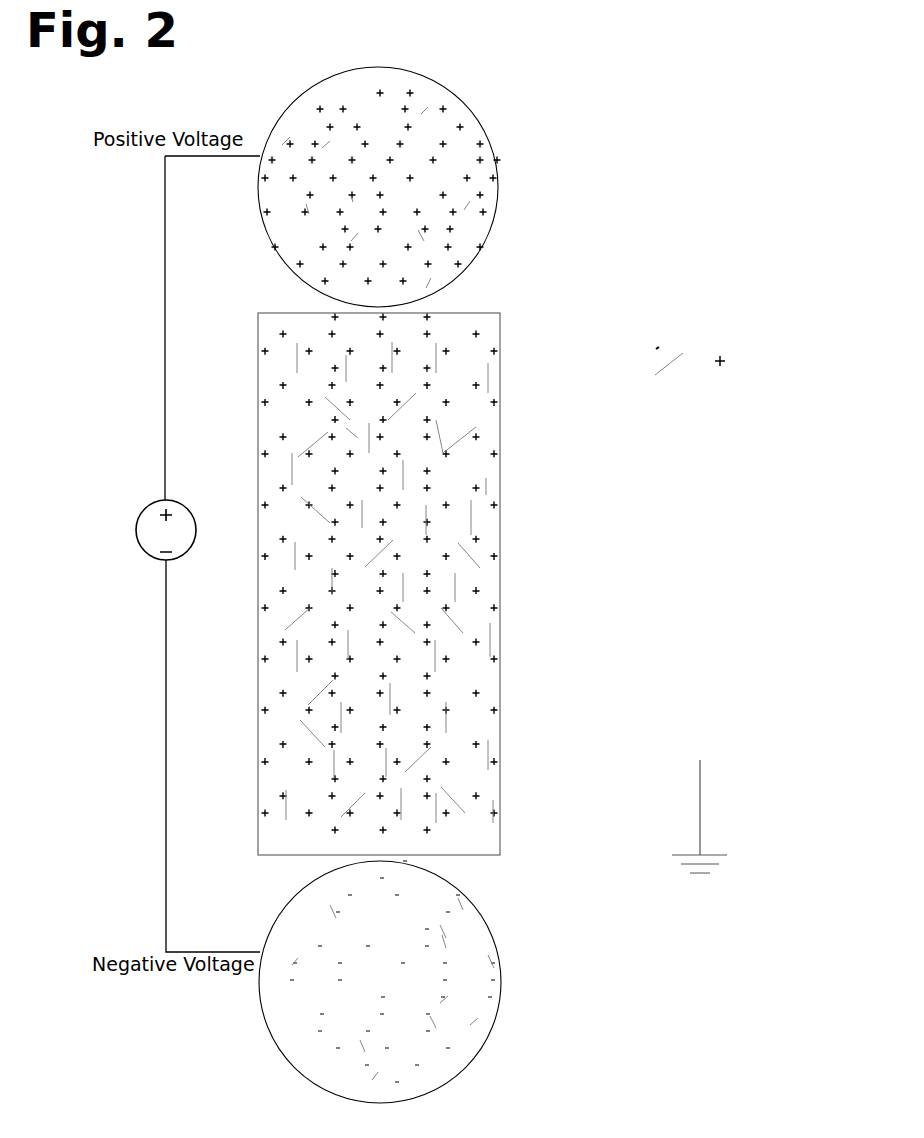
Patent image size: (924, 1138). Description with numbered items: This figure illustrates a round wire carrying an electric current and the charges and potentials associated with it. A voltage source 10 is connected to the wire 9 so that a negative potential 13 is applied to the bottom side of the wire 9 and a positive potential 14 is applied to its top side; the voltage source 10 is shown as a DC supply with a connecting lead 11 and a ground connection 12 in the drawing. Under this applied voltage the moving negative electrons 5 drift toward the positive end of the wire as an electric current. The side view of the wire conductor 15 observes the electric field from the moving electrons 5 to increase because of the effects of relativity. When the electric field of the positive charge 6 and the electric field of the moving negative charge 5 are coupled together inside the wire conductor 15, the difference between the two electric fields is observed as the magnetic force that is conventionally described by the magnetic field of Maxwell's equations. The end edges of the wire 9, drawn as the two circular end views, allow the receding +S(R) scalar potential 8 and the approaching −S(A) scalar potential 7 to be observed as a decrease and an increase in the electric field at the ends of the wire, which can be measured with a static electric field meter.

The moving negative electrons 5 is at (672, 330).
The positive charge 6 is at (728, 346).
The approaching −S(A) scalar potential 7 is at (651, 472).
The receding +S(R) scalar potential 8 is at (748, 432).
The wire 9 is at (497, 210).
The voltage source 10 is at (147, 508).
The conductor wire 11 is at (166, 435).
The ground 12 is at (700, 805).
The negative potential 13 is at (235, 952).
The positive potential 14 is at (236, 157).
The wire conductor 15 is at (500, 508).